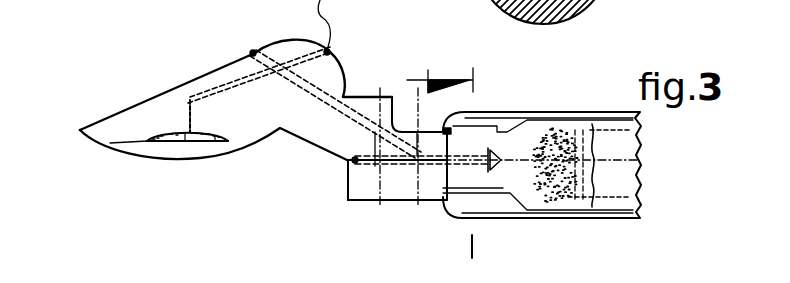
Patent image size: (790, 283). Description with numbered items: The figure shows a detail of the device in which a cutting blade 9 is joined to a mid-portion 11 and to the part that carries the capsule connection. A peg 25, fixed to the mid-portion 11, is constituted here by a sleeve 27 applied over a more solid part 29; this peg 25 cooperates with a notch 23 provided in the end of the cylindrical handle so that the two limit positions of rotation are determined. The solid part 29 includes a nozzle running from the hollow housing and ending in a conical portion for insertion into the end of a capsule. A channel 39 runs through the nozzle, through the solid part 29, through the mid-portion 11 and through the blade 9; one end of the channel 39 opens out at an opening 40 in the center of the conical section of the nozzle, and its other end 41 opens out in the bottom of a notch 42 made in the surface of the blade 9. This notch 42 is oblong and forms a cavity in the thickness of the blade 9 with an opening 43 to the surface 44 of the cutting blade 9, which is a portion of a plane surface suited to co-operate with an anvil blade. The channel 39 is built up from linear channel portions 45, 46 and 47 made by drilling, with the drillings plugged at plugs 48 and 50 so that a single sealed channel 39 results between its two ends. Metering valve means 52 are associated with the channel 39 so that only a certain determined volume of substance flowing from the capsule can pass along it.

The blade 9 is at (125, 120).
The linear channel portion 45 is at (210, 97).
The plug 48 is at (252, 52).
The linear channel portion 46 is at (270, 57).
The channel 39 is at (346, 60).
The metering valve means 52 is at (416, 40).
The notch 23 is at (444, 128).
The peg 25 is at (477, 131).
The sleeve 27 is at (544, 134).
The plug 50 is at (350, 161).
The linear channel portion 47 is at (347, 197).
The solid part 29 is at (367, 187).
The mid-portion 11 is at (409, 206).
The channel end opening 40 is at (492, 172).
The blade surface 44 is at (120, 135).
The notch 42 is at (160, 143).
The channel end 41 is at (181, 143).
The opening 43 is at (211, 142).